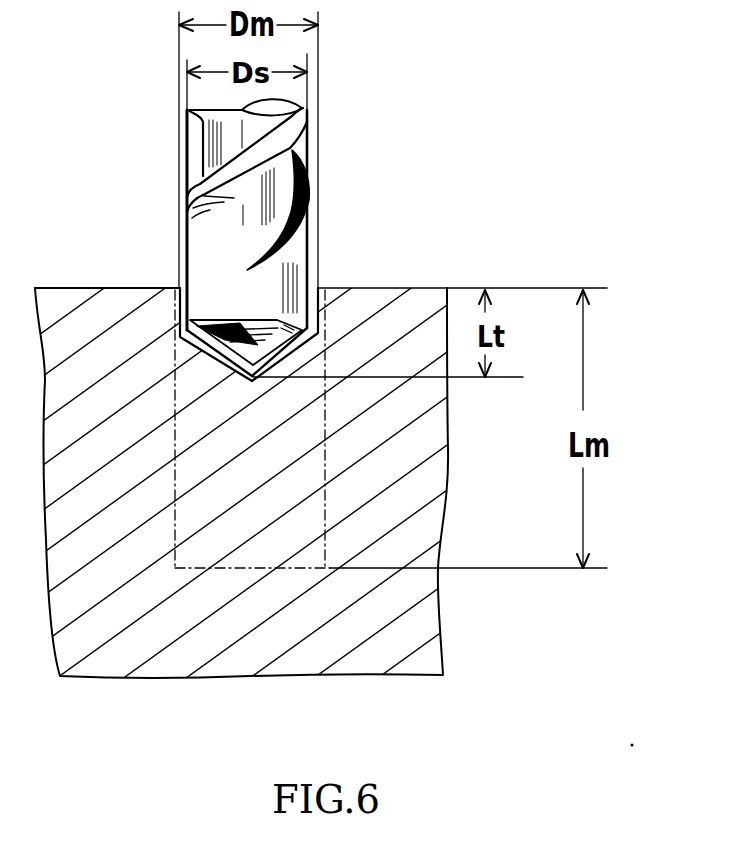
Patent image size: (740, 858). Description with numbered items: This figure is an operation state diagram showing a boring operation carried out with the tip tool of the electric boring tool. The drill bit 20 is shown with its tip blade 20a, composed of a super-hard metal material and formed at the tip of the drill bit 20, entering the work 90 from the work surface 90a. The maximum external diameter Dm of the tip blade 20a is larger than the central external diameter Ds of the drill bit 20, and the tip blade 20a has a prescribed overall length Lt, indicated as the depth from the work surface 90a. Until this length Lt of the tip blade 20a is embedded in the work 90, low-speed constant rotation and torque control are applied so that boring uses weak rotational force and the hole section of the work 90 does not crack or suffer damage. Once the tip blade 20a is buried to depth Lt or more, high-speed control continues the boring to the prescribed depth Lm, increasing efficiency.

The drill bit 20 is at (318, 188).
The tip blade 20a is at (322, 286).
The work 90 is at (420, 615).
The work surface 90a is at (150, 288).